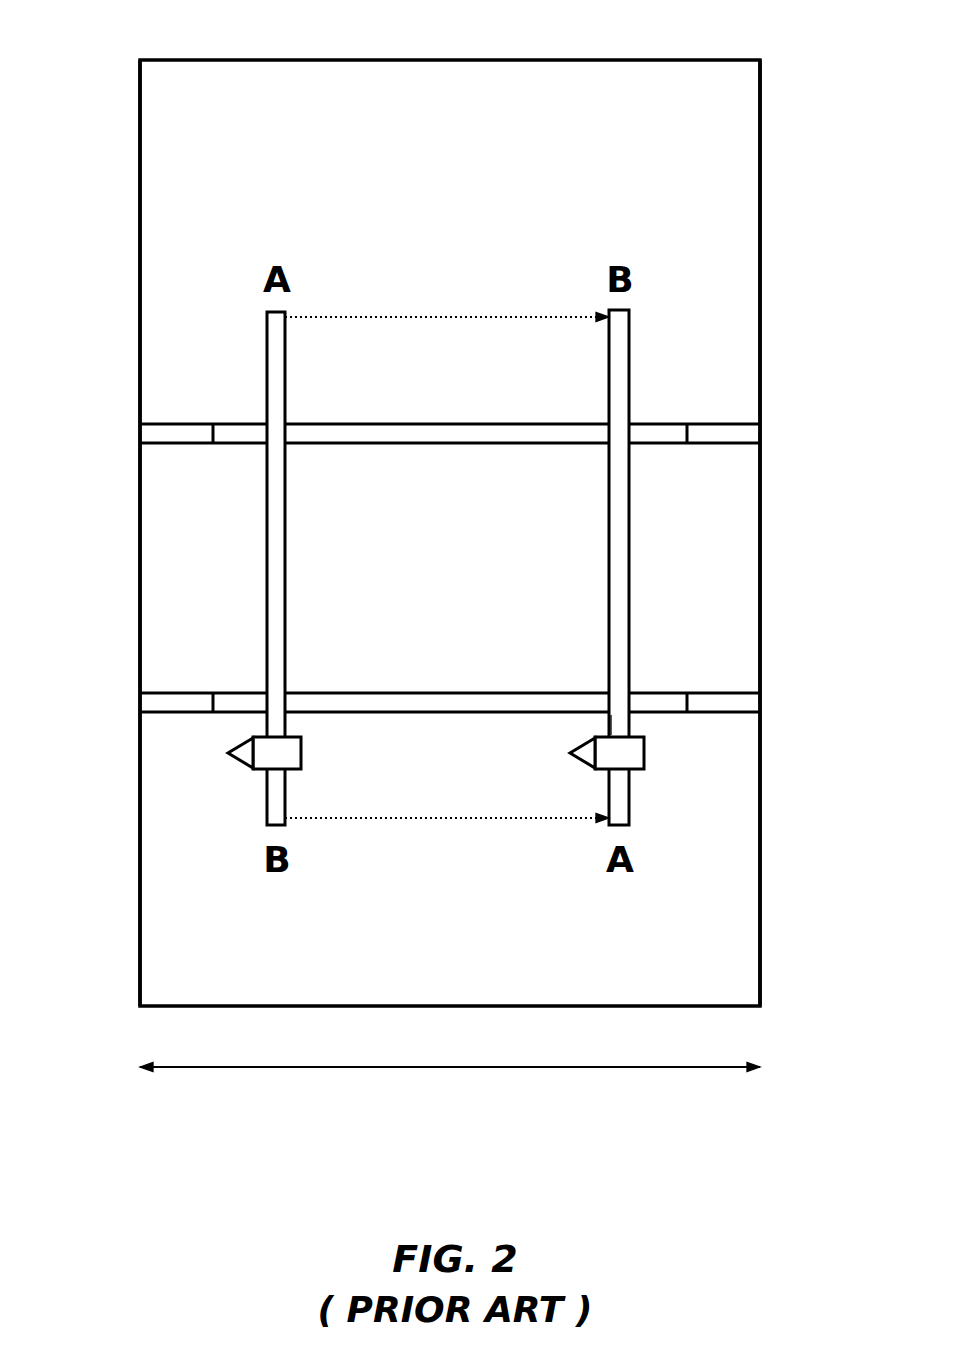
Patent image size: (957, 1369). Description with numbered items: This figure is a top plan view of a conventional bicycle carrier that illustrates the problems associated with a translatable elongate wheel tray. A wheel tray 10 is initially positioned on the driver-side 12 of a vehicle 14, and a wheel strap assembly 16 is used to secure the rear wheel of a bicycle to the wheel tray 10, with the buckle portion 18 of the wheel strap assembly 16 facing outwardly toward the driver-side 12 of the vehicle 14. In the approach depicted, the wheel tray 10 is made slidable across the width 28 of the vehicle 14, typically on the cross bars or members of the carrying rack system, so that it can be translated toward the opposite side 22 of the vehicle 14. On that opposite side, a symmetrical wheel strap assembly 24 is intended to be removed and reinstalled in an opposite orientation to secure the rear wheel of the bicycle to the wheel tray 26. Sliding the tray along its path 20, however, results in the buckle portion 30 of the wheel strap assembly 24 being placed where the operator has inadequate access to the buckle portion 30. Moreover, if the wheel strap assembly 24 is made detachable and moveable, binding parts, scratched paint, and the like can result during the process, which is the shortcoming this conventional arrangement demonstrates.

The wheel tray 10 is at (265, 313).
The driver-side 12 is at (140, 497).
The vehicle 14 is at (448, 57).
The wheel strap assembly 16 is at (253, 775).
The buckle portion 18 is at (224, 755).
The travel path 20 is at (455, 797).
The right side of frame 22 is at (760, 497).
The wheel strap assembly 24 is at (640, 722).
The wheel tray 26 is at (632, 308).
The width 28 is at (452, 1067).
The buckle portion 30 is at (560, 747).